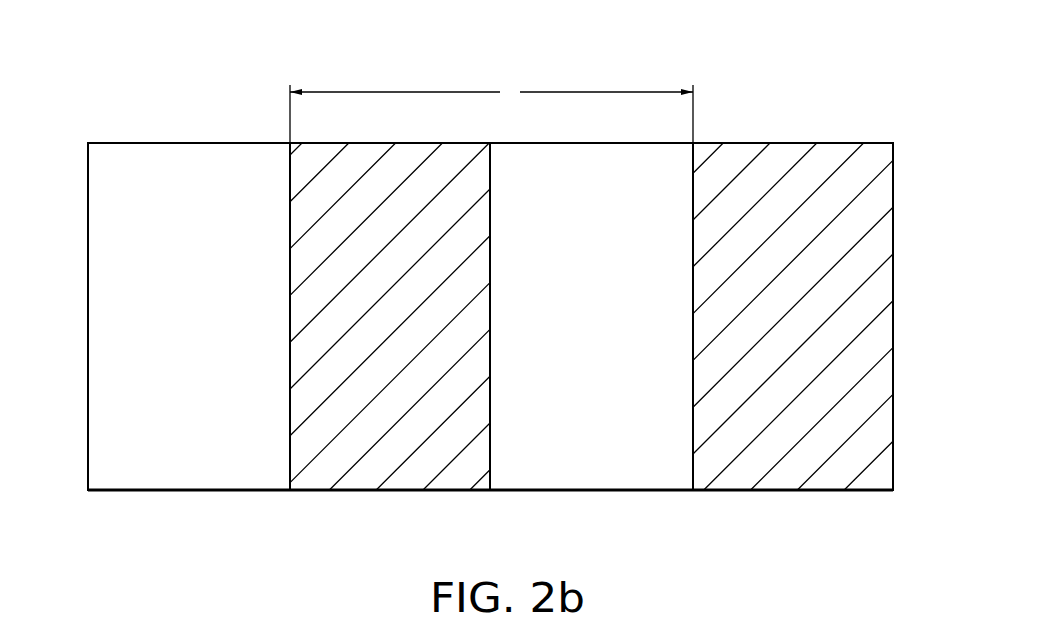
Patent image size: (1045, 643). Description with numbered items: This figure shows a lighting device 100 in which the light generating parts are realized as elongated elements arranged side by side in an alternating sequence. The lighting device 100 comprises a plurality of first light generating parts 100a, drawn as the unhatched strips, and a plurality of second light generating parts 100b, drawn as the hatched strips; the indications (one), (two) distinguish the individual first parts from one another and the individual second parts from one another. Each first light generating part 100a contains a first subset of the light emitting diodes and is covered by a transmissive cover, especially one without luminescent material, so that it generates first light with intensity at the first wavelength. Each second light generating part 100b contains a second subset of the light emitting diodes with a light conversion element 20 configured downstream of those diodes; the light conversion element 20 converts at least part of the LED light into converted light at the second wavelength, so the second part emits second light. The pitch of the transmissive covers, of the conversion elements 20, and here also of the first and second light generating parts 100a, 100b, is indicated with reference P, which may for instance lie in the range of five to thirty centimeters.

The lighting device 100 is at (507, 288).
The first light generating part 100a is at (386, 290).
The second light generating part 100b is at (591, 293).
The light conversion element 20 is at (591, 294).
The pitch P is at (491, 112).